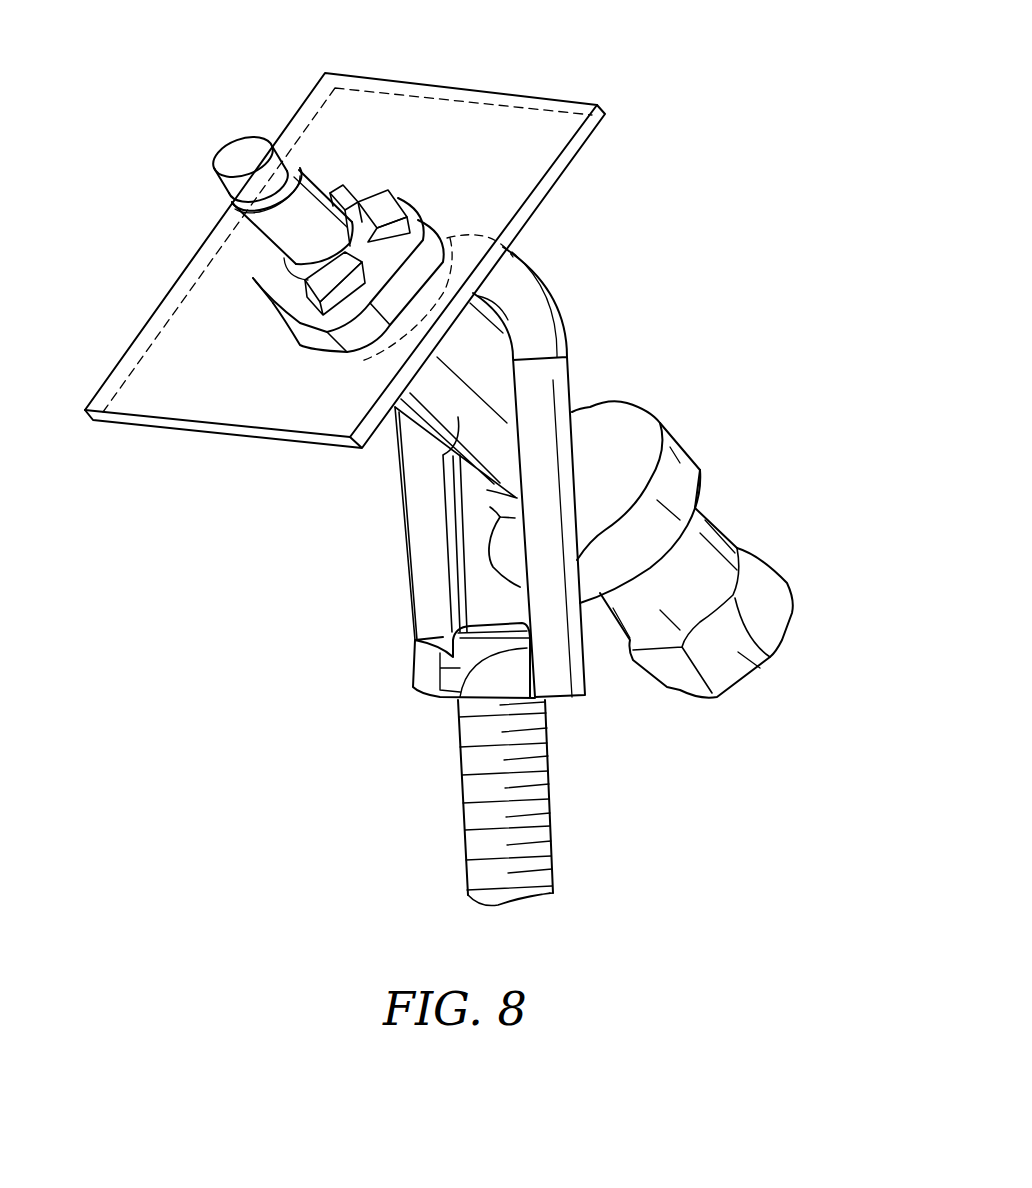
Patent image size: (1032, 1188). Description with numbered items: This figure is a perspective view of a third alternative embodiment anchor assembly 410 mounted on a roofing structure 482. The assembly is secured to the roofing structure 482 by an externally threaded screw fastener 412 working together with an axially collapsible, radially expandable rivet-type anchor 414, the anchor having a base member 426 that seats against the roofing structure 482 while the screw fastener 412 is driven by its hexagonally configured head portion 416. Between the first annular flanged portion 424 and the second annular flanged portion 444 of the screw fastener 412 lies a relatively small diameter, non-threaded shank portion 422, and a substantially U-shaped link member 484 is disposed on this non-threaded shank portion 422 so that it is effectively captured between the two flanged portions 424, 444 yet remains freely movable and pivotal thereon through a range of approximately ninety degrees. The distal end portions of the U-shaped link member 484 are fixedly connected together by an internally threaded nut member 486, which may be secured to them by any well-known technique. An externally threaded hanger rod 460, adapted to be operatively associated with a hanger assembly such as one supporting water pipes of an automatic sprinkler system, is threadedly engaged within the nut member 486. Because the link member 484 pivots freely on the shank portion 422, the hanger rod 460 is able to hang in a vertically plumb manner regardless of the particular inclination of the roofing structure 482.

The anchor assembly 410 is at (611, 261).
The externally threaded screw fastener 412 is at (243, 137).
The axially collapsible, radially expandable rivet-type anchor 414 is at (287, 222).
The head portion 416 is at (737, 650).
The non-threaded shank portion 422 is at (450, 455).
The first annular flanged portion 424 is at (387, 347).
The base member 426 is at (433, 233).
The second annular flanged portion 444 is at (672, 448).
The externally threaded hanger rod 460 is at (533, 810).
The roofing structure 482 is at (187, 403).
The U-shaped link member 484 is at (550, 398).
The internally threaded nut member 486 is at (452, 657).